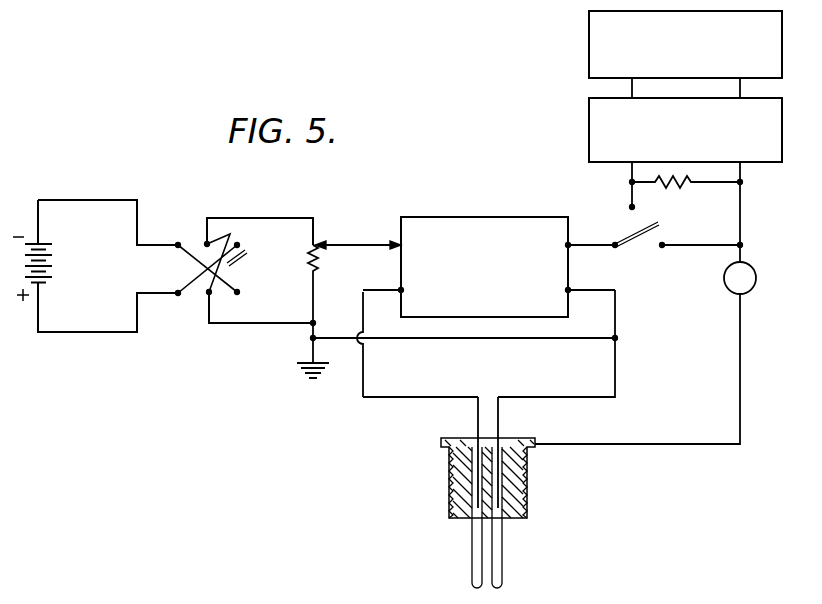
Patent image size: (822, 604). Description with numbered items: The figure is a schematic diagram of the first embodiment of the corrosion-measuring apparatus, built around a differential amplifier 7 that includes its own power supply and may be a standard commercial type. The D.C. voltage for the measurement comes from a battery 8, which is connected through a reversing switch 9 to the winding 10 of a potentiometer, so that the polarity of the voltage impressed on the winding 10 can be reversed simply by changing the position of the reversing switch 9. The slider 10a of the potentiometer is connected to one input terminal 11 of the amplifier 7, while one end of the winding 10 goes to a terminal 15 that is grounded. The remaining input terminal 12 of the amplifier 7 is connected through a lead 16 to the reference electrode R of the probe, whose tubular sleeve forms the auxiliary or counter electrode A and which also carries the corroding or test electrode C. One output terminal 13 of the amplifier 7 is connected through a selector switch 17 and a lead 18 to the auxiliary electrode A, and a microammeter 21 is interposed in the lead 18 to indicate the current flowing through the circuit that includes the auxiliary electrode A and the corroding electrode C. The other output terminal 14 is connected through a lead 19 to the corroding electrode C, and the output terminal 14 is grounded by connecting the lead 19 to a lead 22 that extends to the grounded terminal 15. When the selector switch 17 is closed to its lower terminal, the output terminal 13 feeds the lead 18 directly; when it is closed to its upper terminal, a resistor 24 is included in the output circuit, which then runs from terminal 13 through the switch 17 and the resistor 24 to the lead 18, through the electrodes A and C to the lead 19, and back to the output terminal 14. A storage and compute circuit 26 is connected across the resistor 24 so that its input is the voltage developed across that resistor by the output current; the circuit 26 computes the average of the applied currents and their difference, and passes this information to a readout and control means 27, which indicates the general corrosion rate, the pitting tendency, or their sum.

The differential amplifier 7 is at (480, 217).
The battery 8 is at (50, 261).
The reversing switch 9 is at (201, 244).
The winding of potentiometer 10 is at (318, 267).
The slider of potentiometer 10a is at (326, 241).
The input terminal 11 is at (398, 243).
The input terminal 12 is at (400, 288).
The output terminal 13 is at (572, 244).
The output terminal 14 is at (575, 290).
The terminal 15 is at (306, 340).
The lead 16 is at (441, 397).
The selector switch 17 is at (634, 240).
The lead 18 is at (740, 356).
The lead 19 is at (616, 380).
The microammeter 21 is at (757, 276).
The lead 22 is at (558, 340).
The resistor 24 is at (678, 185).
The storage and compute circuit 26 is at (588, 131).
The readout and control means 27 is at (588, 37).
The auxiliary or counter electrode A is at (527, 492).
The reference electrode R is at (472, 576).
The corroding electrode C is at (503, 575).